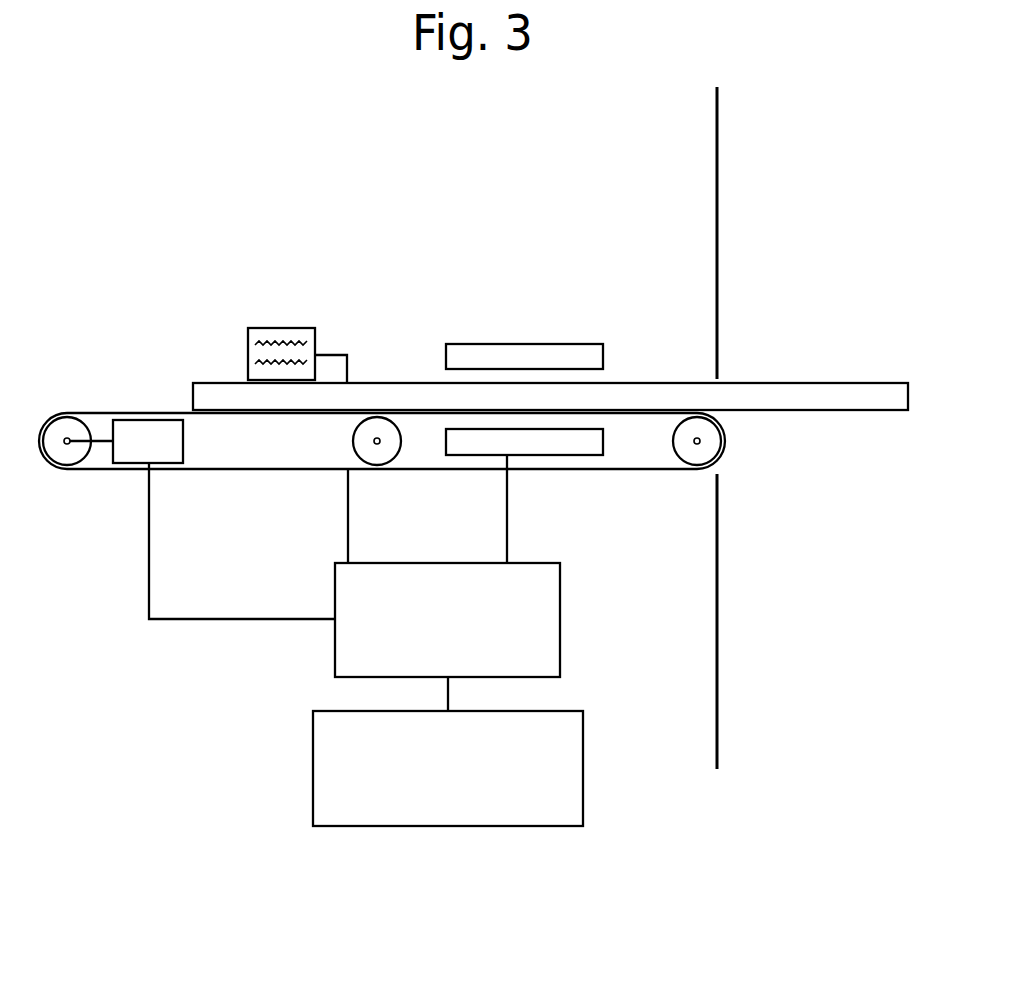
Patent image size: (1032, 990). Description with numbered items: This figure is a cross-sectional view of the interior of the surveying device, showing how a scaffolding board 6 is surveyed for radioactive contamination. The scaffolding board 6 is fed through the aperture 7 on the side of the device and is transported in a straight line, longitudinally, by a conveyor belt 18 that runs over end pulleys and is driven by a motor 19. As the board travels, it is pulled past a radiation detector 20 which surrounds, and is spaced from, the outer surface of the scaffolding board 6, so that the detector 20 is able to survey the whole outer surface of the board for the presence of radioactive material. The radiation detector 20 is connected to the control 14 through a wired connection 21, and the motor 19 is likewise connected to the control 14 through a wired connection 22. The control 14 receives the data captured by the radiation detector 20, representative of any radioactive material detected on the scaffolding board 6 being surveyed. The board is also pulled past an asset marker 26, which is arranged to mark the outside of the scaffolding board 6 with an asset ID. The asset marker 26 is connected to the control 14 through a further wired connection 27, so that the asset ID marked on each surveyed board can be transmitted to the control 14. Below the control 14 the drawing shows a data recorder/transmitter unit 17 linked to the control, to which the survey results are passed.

The scaffolding board 6 is at (822, 393).
The aperture 7 is at (717, 471).
The control 14 is at (560, 609).
The data recorder/transmitter 17 is at (313, 762).
The conveyor belt 18 is at (62, 470).
The motor 19 is at (133, 420).
The radiation detector 20 is at (560, 343).
The wired connection 21 is at (507, 520).
The wired connection 22 is at (167, 620).
The asset marker 26 is at (283, 328).
The wired connection 27 is at (348, 520).